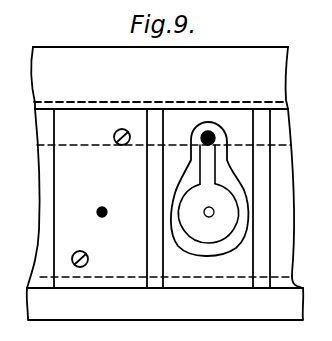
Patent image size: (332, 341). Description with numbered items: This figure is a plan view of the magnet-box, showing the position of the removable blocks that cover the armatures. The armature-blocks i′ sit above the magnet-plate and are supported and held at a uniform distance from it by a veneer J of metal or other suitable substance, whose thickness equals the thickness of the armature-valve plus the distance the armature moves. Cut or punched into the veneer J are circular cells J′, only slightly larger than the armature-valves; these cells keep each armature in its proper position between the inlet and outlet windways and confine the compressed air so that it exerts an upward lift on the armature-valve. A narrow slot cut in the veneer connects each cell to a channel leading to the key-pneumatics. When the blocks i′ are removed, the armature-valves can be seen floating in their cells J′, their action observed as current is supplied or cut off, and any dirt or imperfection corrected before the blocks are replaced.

The armature-block i′ is at (165, 183).
The veneer J is at (215, 178).
The circular cell J′ is at (208, 213).